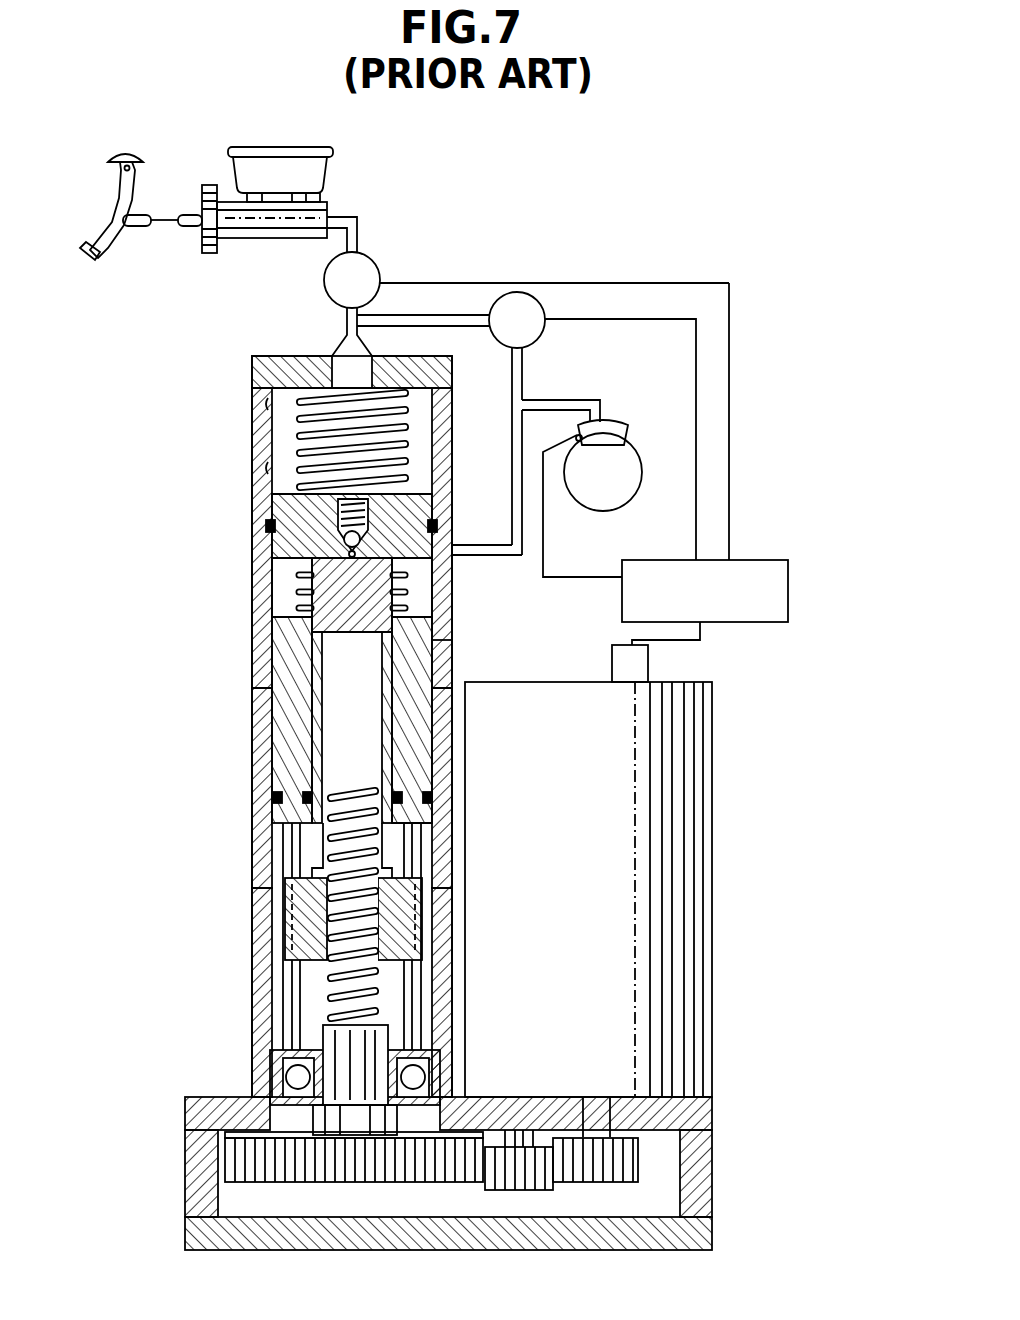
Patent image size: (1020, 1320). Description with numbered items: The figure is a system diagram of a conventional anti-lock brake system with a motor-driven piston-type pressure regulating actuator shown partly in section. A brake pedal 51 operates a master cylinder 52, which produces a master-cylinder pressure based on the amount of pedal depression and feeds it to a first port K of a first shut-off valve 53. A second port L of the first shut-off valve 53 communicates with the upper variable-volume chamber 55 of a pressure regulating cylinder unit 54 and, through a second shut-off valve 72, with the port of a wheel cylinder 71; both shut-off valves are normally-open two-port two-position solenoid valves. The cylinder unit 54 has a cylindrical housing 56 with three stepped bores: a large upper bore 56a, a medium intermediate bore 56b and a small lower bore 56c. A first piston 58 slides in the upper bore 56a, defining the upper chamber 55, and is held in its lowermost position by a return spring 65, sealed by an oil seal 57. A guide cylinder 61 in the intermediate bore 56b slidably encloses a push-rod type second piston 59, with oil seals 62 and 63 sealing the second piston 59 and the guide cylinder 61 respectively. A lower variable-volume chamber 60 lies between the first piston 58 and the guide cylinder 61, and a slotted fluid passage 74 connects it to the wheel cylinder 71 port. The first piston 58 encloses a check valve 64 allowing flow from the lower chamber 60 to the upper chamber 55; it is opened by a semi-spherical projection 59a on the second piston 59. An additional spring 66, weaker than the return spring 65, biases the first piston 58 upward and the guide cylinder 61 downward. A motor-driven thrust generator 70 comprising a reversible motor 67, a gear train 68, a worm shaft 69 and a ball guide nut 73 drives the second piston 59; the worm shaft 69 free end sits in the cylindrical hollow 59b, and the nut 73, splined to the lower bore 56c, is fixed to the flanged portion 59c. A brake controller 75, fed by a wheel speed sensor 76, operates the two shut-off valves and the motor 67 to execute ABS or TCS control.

The brake pedal 51 is at (130, 250).
The master cylinder 52 is at (290, 232).
The first shut-off valve 53 is at (372, 268).
The pressure regulating cylinder unit 54 is at (208, 408).
The upper variable-volume chamber 55 is at (287, 430).
The cylindrical housing 56 is at (262, 482).
The upper bore 56a is at (252, 412).
The intermediate bore 56b is at (285, 755).
The lower bore 56c is at (287, 853).
The oil seal 57 is at (268, 527).
The first piston 58 is at (300, 574).
The second piston 59 is at (300, 603).
The upper semi-spherical projection 59a is at (440, 648).
The cylindrical hollow 59b is at (376, 722).
The flanged portion 59c is at (400, 860).
The lower variable-volume chamber 60 is at (430, 588).
The guide cylinder 61 is at (290, 718).
The oil seal 62 is at (430, 762).
The oil seal 63 is at (273, 797).
The check valve 64 is at (388, 530).
The return spring 65 is at (420, 443).
The additional spring 66 is at (290, 648).
The reversible motor 67 is at (665, 962).
The gear train 68 is at (368, 1172).
The worm shaft 69 is at (330, 1008).
The motor-driven thrust generator 70 is at (318, 967).
The wheel cylinder 71 is at (616, 432).
The second shut-off valve 72 is at (527, 300).
The ball guide nut 73 is at (425, 985).
The slotted fluid passage 74 is at (458, 556).
The brake controller 75 is at (727, 620).
The wheel speed sensor 76 is at (578, 434).
The first port K is at (362, 247).
The second port L is at (342, 320).